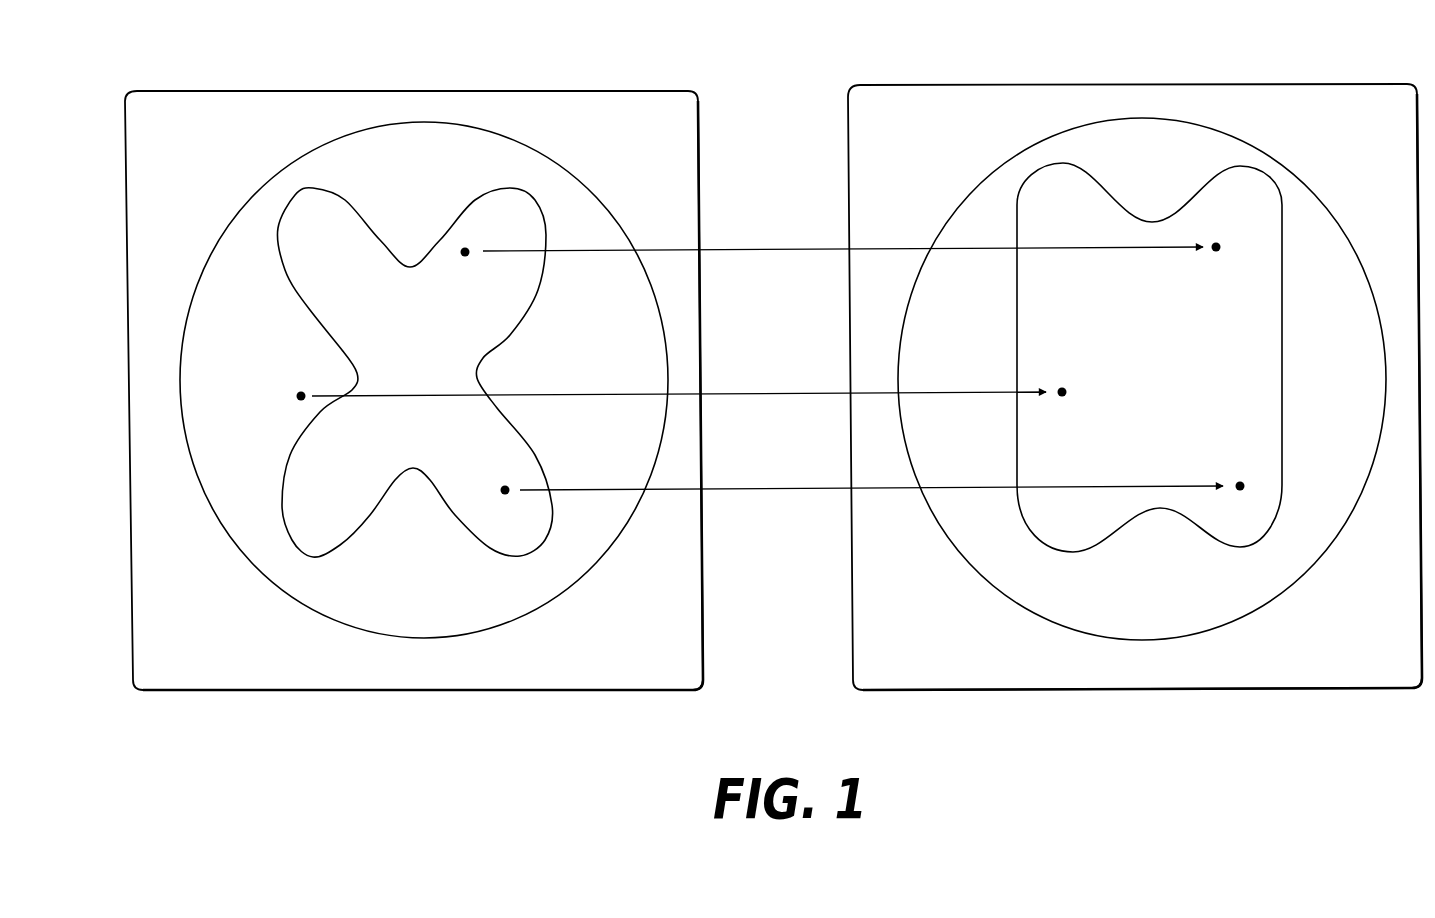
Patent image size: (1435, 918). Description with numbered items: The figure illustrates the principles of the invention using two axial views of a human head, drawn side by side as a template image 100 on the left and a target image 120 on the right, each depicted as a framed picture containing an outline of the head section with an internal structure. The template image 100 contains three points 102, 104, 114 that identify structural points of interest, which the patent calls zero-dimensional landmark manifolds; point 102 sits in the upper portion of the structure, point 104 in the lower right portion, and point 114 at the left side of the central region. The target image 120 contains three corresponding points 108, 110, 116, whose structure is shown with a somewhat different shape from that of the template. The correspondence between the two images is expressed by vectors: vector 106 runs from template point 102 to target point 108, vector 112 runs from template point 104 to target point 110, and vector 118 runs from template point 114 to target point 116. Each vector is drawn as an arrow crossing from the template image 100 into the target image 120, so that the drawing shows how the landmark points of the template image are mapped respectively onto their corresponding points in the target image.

The template image 100 is at (200, 104).
The target image 120 is at (915, 101).
The point 102 is at (462, 251).
The point 104 is at (505, 494).
The point 114 is at (301, 400).
The point 108 is at (1214, 245).
The point 110 is at (1240, 491).
The point 116 is at (1066, 391).
The vector 106 is at (776, 248).
The vector 118 is at (776, 392).
The vector 112 is at (779, 492).